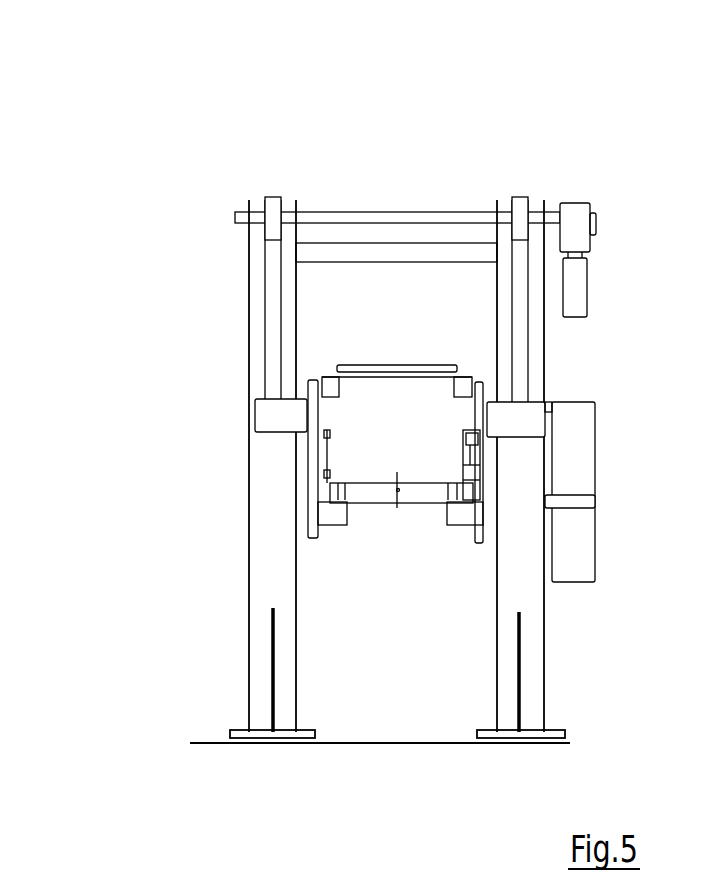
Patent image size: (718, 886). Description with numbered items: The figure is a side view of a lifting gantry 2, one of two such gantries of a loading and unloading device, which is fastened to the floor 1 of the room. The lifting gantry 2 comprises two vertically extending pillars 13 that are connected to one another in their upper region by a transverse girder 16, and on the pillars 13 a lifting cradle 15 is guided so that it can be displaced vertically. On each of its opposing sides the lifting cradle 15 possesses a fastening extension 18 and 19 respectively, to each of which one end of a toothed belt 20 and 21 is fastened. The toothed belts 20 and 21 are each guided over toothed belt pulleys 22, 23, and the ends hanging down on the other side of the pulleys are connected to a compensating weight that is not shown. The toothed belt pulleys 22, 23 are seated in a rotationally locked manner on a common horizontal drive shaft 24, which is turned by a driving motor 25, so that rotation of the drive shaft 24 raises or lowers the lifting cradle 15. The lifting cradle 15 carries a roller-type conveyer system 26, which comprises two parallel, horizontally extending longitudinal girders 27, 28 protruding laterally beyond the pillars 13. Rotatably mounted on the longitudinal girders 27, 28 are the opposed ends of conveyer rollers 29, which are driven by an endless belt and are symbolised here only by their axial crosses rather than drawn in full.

The floor 1 is at (415, 745).
The lifting gantry 2 is at (142, 181).
The pillars 13 is at (258, 575).
The lifting cradle 15 is at (407, 488).
The transverse girder 16 is at (400, 258).
The fastening extension 18 is at (267, 419).
The fastening extension 19 is at (520, 425).
The toothed belt 20 is at (273, 292).
The toothed belt 21 is at (518, 353).
The toothed belt pulley 22 is at (272, 200).
The toothed belt pulley 23 is at (520, 200).
The drive shaft 24 is at (328, 213).
The driving motor 25 is at (572, 232).
The roller-type conveyer system 26 is at (361, 484).
The longitudinal girder 27 is at (327, 513).
The longitudinal girder 28 is at (467, 517).
The conveyer rollers 29 is at (385, 493).